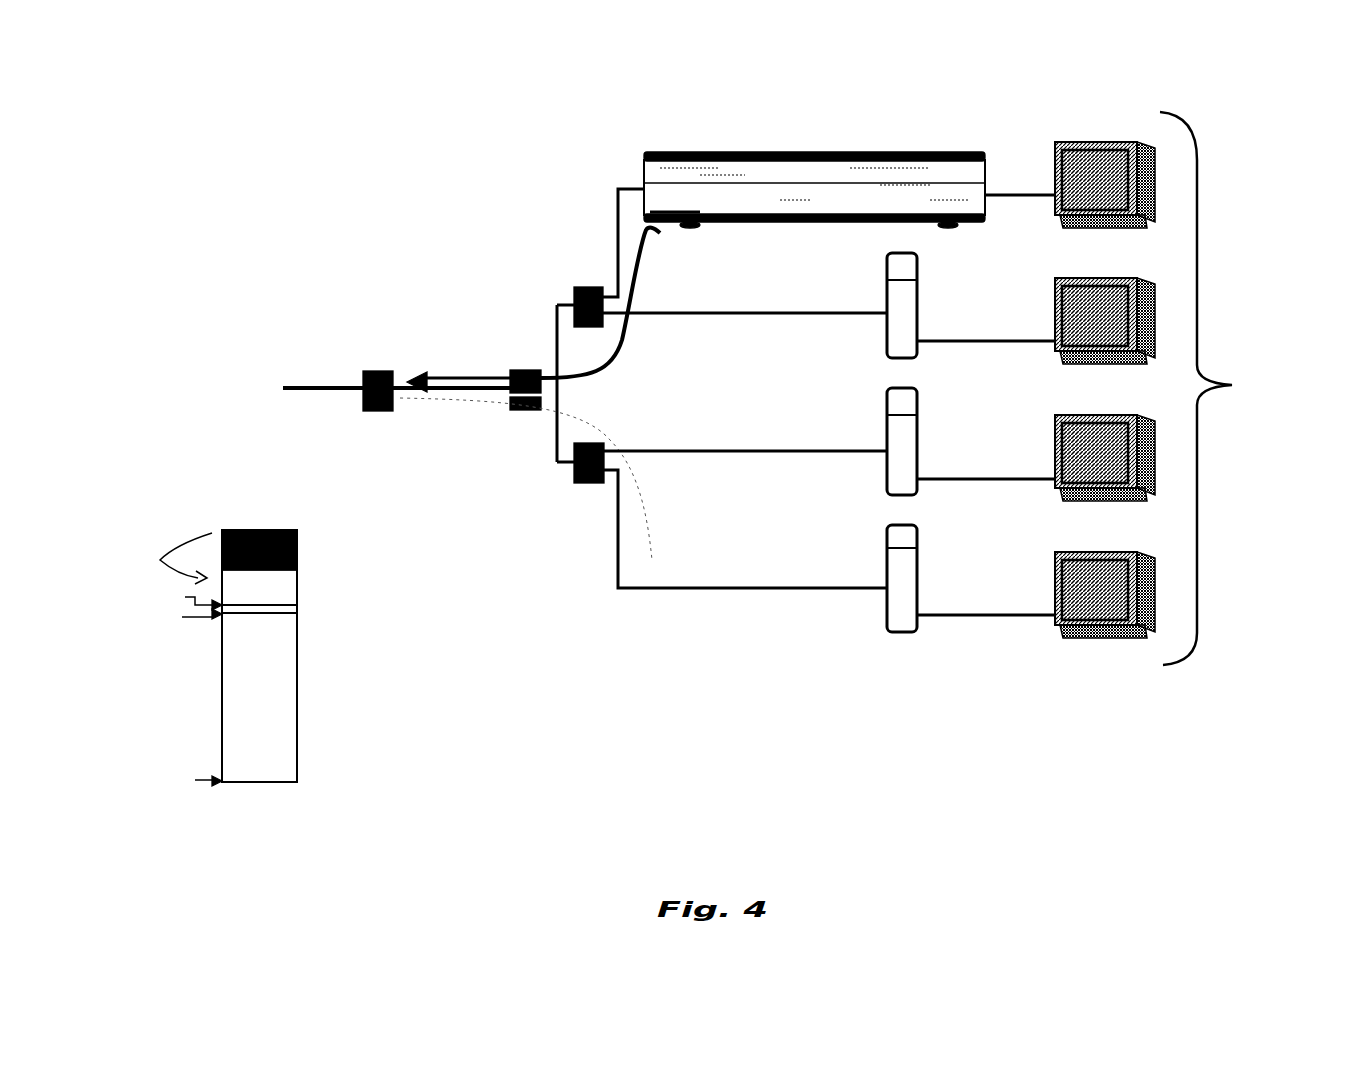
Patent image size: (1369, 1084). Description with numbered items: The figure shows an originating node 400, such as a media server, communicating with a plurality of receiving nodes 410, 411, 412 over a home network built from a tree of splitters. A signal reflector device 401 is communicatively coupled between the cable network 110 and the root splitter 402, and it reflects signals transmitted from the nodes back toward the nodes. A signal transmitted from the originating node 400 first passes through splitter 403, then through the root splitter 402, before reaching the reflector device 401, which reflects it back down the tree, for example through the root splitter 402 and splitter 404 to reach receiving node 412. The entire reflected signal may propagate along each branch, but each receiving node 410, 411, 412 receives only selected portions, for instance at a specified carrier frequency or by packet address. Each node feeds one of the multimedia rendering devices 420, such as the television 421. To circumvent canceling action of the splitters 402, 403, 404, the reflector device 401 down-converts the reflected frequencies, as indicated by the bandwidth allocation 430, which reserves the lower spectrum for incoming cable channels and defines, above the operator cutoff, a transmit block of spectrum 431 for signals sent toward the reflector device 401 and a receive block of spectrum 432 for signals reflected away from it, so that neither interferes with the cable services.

The cable network 110 is at (326, 381).
The originating node 400 is at (648, 158).
The signal reflector device 401 is at (378, 371).
The root splitter 402 is at (522, 370).
The splitter 403 is at (582, 288).
The splitter 404 is at (585, 482).
The receiving node 410 is at (887, 325).
The receiving node 411 is at (887, 462).
The receiving node 412 is at (886, 607).
The multimedia rendering devices 420 is at (1161, 445).
The television 421 is at (1093, 630).
The bandwidth allocation 430 is at (266, 697).
The transmit block of spectrum 431 is at (304, 547).
The receive block of spectrum 432 is at (304, 585).